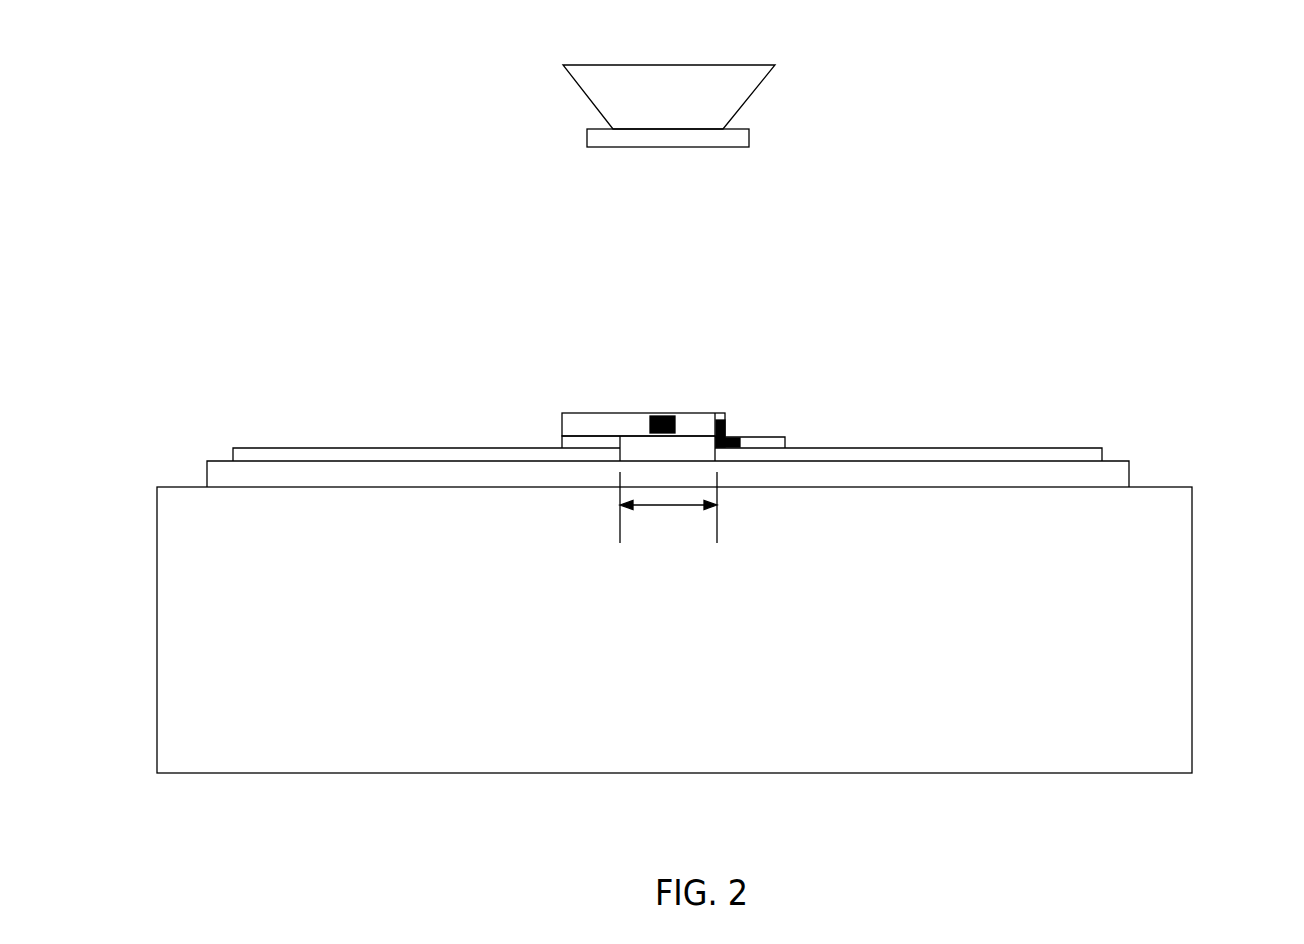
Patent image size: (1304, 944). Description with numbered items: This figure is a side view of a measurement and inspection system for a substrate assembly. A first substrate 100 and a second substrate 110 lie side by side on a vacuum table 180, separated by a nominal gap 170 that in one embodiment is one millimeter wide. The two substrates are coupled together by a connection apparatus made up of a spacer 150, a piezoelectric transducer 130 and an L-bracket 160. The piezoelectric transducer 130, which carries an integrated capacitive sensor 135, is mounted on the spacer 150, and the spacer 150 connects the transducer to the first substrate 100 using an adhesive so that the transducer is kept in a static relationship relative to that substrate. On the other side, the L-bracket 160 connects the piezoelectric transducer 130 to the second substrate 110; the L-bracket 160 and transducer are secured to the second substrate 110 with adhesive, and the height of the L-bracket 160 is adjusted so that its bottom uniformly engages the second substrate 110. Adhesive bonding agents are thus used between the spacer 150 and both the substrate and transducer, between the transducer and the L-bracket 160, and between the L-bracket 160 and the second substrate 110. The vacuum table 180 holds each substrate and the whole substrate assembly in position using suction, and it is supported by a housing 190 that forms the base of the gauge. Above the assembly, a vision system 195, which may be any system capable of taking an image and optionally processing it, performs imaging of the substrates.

The vision system 195 is at (789, 92).
The housing 190 is at (966, 711).
The vacuum table 180 is at (1138, 447).
The second substrate 110 is at (1091, 431).
The first substrate 100 is at (458, 436).
The spacer 150 is at (590, 432).
The piezoelectric transducer 130 is at (598, 399).
The integrated capacitive sensor 135 is at (656, 402).
The L-bracket 160 is at (772, 426).
The nominal gap 170 is at (668, 505).